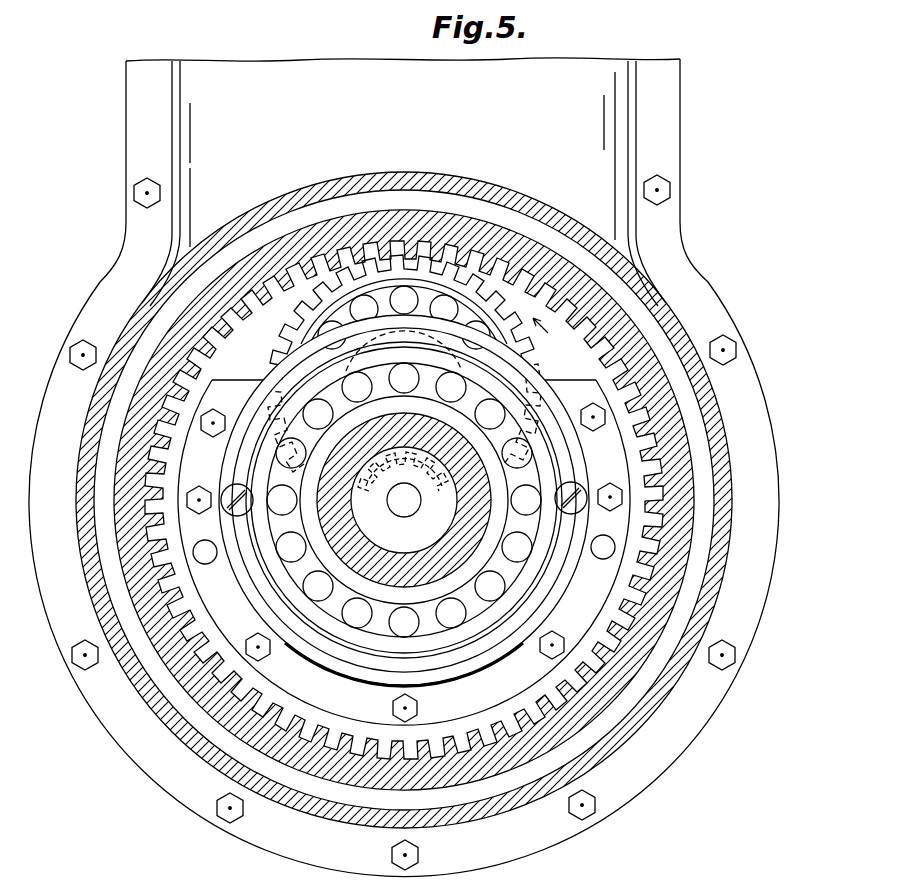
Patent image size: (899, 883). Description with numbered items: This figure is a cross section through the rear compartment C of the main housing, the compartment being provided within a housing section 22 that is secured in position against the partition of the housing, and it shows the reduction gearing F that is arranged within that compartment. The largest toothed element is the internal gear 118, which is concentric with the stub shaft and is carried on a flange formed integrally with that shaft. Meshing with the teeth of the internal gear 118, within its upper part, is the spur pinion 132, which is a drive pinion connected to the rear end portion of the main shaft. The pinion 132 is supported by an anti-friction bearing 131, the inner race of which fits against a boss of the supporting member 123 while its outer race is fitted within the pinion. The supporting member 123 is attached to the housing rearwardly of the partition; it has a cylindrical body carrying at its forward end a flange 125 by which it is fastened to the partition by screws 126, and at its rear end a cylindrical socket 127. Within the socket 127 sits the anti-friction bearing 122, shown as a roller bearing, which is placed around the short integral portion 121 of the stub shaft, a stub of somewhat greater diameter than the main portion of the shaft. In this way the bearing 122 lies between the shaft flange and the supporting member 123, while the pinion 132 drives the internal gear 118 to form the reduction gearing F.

The housing section 22 is at (558, 215).
The internal gear 118 is at (475, 237).
The integral portion 121 is at (400, 572).
The anti-friction bearing 122 is at (323, 583).
The supporting member 123 is at (540, 374).
The flange 125 is at (223, 397).
The screws 126 is at (212, 431).
The cylindrical socket 127 is at (257, 558).
The anti-friction bearing 131 is at (363, 311).
The spur pinion 132 is at (378, 262).
The rear portion C is at (200, 277).
The reduction gearing F is at (547, 333).